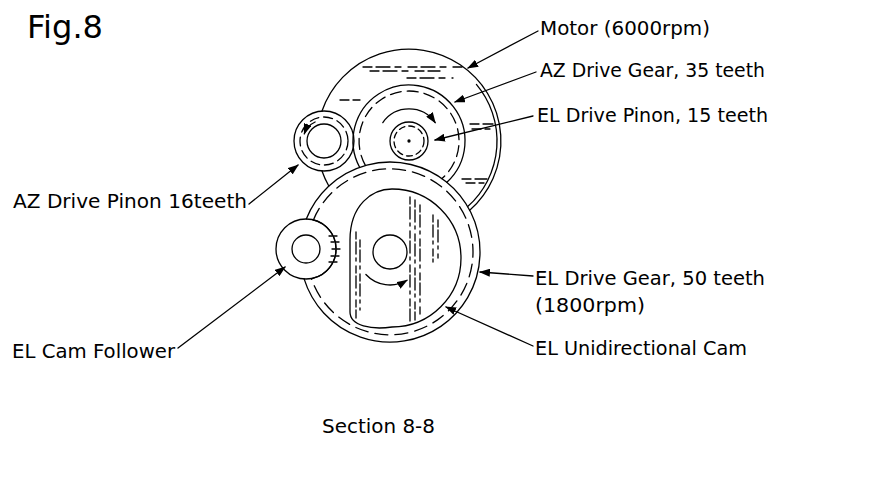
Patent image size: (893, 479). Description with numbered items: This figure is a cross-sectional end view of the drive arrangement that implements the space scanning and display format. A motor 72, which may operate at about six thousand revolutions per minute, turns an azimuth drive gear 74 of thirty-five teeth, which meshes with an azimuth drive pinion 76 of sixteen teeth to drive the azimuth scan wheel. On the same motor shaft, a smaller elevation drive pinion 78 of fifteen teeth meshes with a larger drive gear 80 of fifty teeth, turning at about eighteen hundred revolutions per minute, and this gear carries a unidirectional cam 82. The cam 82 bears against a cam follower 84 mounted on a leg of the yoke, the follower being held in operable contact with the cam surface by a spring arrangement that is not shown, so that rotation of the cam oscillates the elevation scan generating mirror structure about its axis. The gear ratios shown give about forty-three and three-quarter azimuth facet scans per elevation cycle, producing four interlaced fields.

The motor 72 is at (420, 49).
The azimuth drive gear 74 is at (462, 171).
The azimuth drive pinion 76 is at (297, 121).
The elevation drive pinion 78 is at (428, 150).
The drive gear 80 is at (481, 248).
The unidirectional cam 82 is at (438, 312).
The cam follower 84 is at (283, 240).